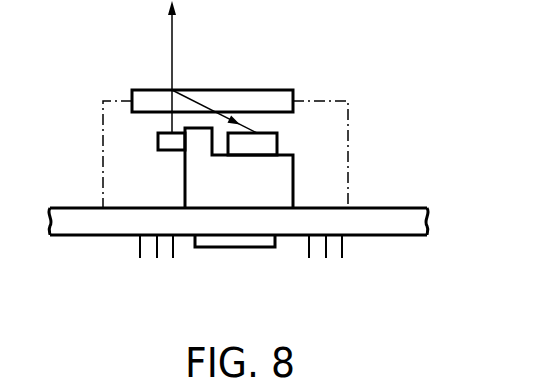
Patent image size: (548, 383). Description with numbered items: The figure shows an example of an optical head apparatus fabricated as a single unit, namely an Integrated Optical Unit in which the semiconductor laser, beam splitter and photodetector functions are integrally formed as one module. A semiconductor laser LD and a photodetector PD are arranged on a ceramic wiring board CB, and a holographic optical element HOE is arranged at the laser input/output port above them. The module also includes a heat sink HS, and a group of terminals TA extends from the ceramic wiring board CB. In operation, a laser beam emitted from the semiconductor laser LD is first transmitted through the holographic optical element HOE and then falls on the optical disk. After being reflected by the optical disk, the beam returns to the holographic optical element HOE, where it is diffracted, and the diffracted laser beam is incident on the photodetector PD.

The holographic optical element HOE is at (248, 95).
The semiconductor laser LD is at (170, 142).
The photodetector PD is at (278, 146).
The heat sink HS is at (280, 183).
The ceramic wiring board CB is at (388, 213).
The group of terminals TA is at (179, 267).